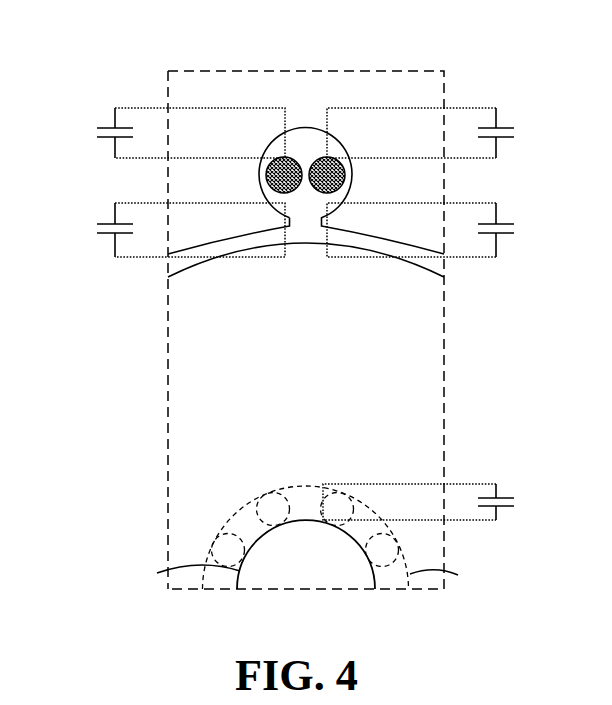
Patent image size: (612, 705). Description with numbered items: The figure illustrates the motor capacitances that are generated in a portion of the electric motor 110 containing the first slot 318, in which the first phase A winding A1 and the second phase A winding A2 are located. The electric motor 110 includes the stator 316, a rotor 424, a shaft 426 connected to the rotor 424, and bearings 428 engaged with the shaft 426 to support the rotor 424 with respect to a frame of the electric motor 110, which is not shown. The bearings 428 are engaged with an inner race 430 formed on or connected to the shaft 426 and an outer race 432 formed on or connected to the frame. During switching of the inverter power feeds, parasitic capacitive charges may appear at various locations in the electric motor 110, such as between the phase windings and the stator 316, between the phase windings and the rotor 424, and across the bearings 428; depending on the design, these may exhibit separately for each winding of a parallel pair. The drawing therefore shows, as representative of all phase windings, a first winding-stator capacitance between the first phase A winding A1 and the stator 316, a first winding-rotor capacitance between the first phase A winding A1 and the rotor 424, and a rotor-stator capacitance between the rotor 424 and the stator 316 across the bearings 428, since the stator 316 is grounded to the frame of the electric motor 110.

The electric motor 110 is at (136, 73).
The stator 316 is at (378, 71).
The first slot 318 is at (306, 128).
The first phase A winding A1 is at (266, 175).
The second phase A winding A2 is at (345, 175).
The rotor 424 is at (168, 363).
The shaft 426 is at (320, 572).
The bearings 428 is at (262, 496).
The inner race 430 is at (452, 574).
The outer race 432 is at (160, 573).